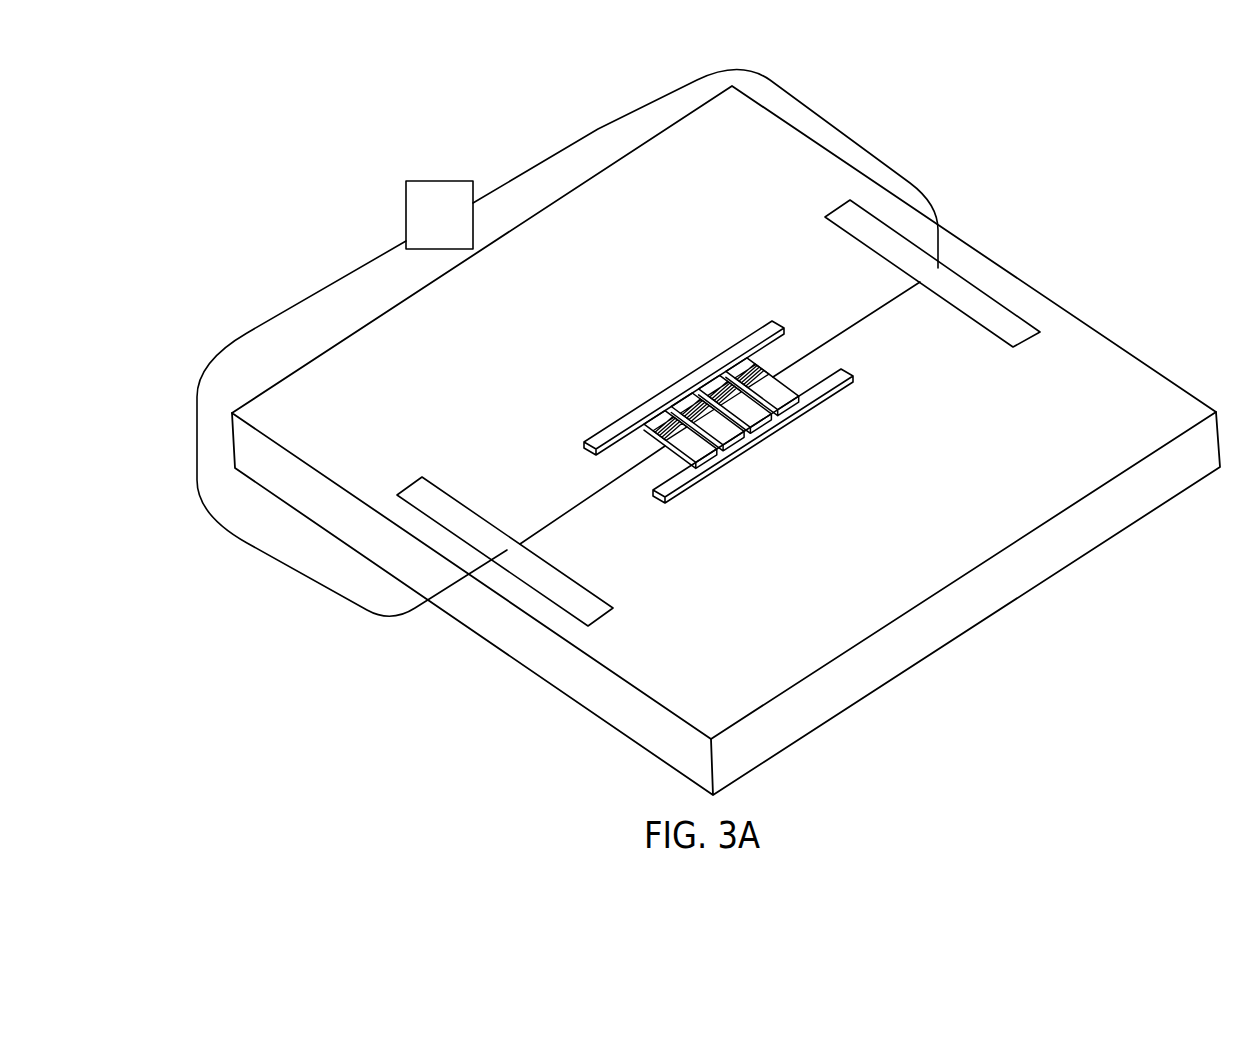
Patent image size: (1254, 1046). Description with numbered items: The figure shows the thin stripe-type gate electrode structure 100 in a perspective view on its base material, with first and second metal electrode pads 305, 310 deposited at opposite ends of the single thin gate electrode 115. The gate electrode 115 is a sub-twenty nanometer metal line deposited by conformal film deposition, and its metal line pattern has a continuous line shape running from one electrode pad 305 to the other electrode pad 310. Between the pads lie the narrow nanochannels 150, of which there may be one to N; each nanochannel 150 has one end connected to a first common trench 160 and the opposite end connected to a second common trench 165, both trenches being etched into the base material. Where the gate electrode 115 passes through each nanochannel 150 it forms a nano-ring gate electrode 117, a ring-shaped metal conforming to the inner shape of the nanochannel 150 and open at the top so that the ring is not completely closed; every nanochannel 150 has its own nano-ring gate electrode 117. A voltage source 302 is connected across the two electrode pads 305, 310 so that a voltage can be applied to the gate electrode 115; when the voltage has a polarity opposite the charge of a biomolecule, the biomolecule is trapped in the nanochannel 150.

The thin stripe-type gate electrode structure 100 is at (1083, 231).
The single thin gate electrode 115 is at (858, 323).
The nano-ring gate electrode 117 is at (743, 357).
The nanochannel 150 is at (777, 418).
The first common trench 160 is at (598, 446).
The second common trench 165 is at (848, 383).
The voltage source 302 is at (406, 201).
The first electrode pad 305 is at (594, 611).
The second electrode pad 310 is at (1022, 332).